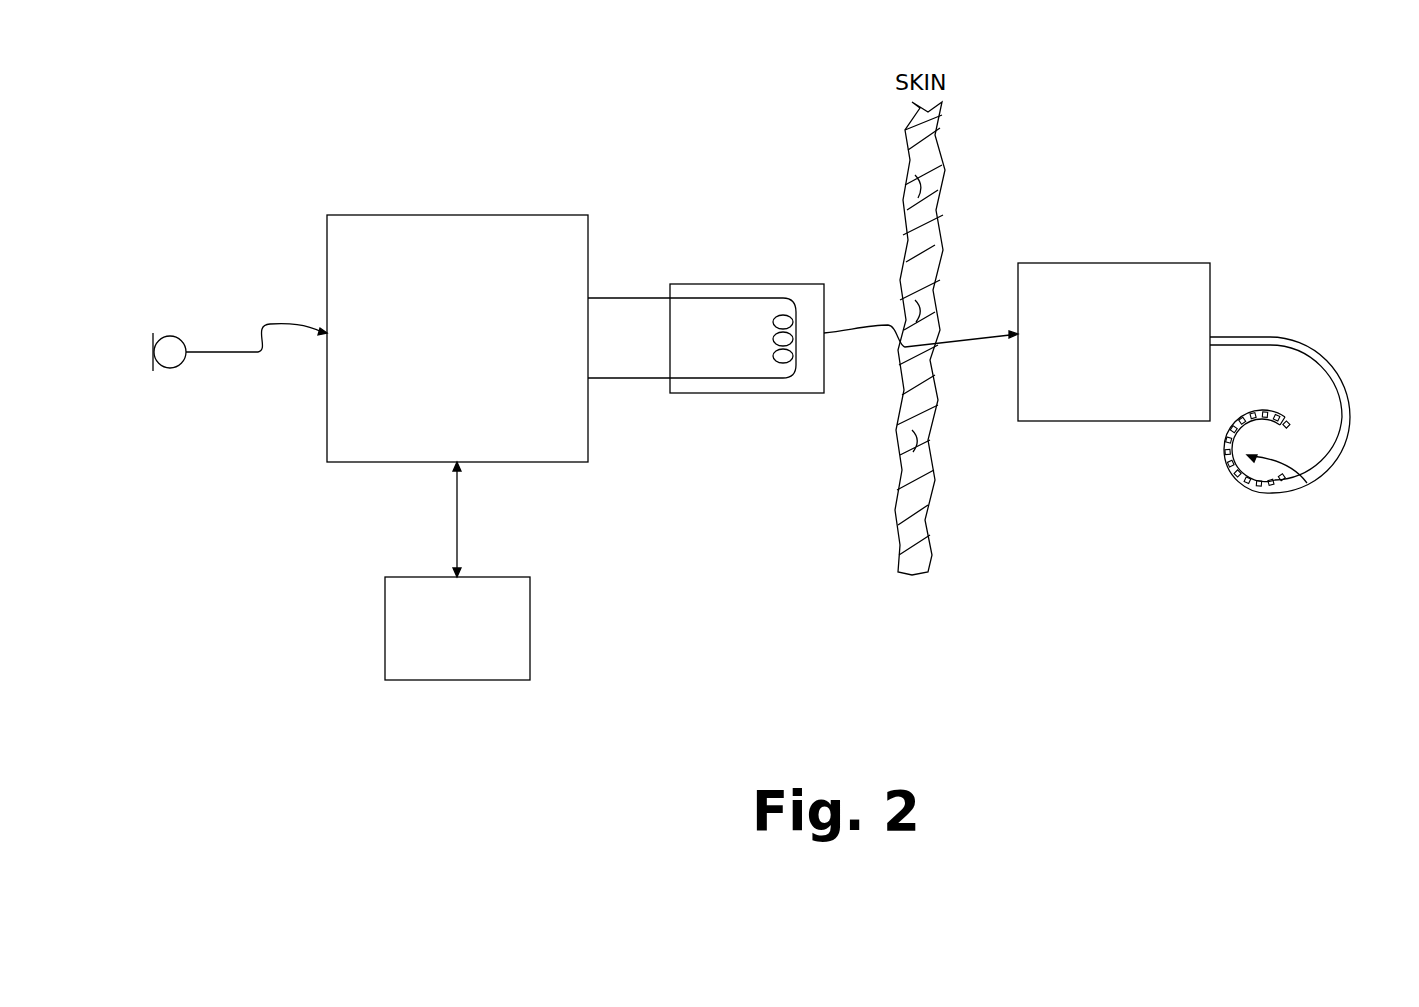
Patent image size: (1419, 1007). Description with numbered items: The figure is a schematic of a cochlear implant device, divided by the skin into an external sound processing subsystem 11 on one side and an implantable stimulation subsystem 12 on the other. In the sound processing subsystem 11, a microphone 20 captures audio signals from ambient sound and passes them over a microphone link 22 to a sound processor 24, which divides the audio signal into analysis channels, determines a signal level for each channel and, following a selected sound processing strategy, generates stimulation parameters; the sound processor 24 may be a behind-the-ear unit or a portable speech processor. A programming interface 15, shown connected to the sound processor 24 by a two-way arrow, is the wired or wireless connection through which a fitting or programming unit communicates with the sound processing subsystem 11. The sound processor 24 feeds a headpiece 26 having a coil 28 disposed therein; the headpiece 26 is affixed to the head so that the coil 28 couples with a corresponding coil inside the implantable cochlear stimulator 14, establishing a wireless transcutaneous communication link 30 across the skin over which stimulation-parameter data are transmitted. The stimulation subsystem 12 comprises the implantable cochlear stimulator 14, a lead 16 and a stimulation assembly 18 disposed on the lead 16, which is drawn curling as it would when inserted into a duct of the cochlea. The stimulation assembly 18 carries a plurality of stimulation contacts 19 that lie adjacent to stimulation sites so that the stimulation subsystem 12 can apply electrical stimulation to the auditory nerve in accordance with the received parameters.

The sound processing subsystem 11 is at (306, 153).
The implantable stimulation subsystem 12 is at (1197, 190).
The implantable cochlear stimulator (ICS) 14 is at (1123, 377).
The programming interface 15 is at (471, 641).
The lead 16 is at (1292, 455).
The stimulation assembly 18 is at (1260, 491).
The stimulation contacts 19 is at (1307, 483).
The microphone 20 is at (168, 369).
The microphone link 22 is at (256, 355).
The sound processor 24 is at (470, 397).
The headpiece 26 is at (711, 347).
The coil 28 is at (796, 365).
The wireless transcutaneous communication link 30 is at (975, 340).